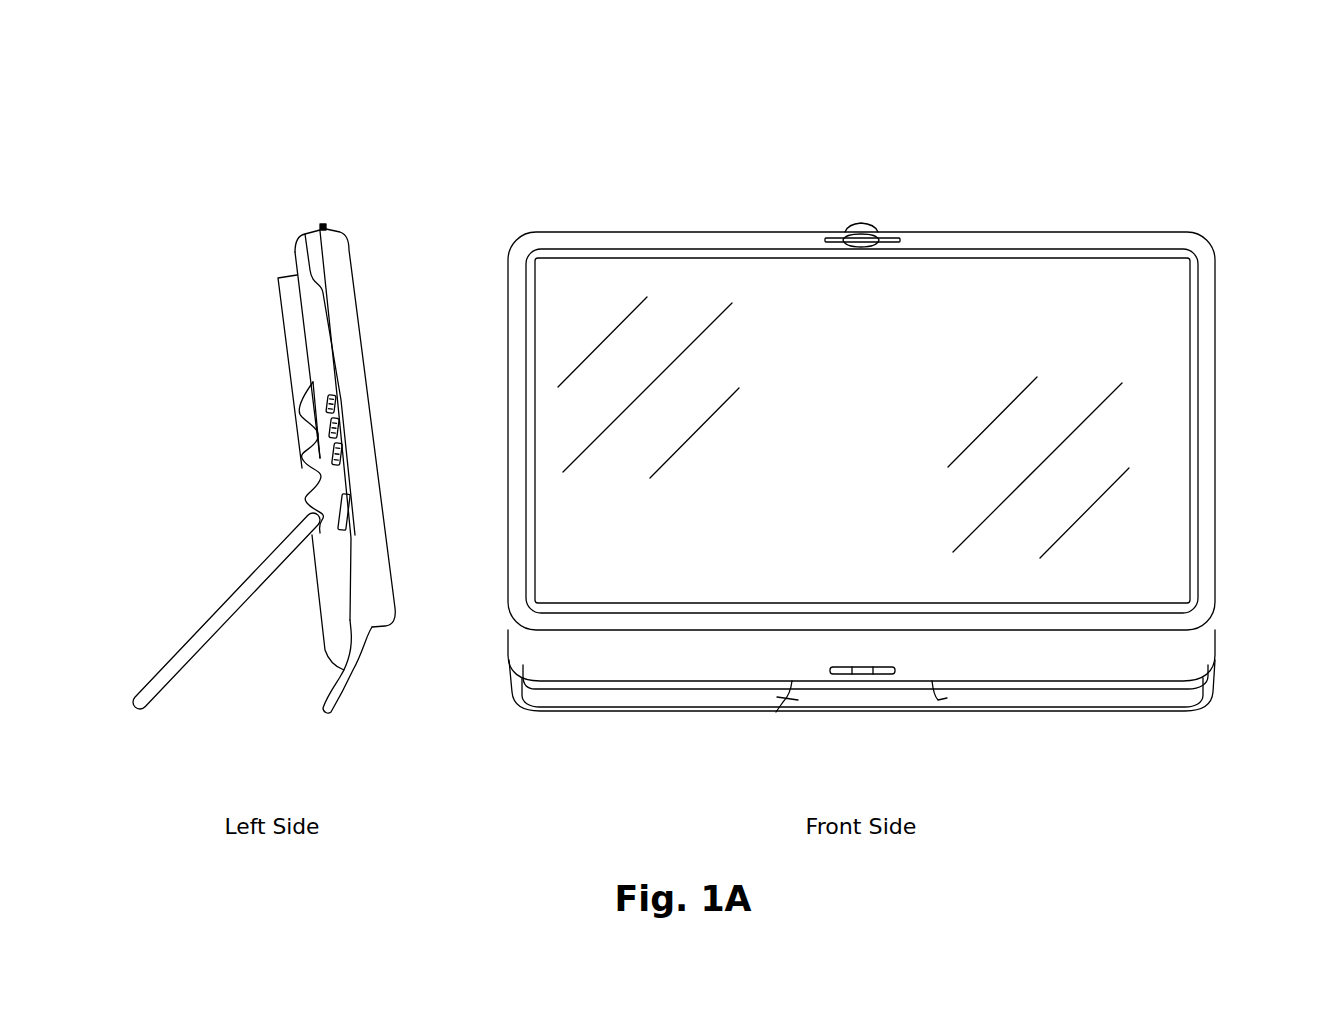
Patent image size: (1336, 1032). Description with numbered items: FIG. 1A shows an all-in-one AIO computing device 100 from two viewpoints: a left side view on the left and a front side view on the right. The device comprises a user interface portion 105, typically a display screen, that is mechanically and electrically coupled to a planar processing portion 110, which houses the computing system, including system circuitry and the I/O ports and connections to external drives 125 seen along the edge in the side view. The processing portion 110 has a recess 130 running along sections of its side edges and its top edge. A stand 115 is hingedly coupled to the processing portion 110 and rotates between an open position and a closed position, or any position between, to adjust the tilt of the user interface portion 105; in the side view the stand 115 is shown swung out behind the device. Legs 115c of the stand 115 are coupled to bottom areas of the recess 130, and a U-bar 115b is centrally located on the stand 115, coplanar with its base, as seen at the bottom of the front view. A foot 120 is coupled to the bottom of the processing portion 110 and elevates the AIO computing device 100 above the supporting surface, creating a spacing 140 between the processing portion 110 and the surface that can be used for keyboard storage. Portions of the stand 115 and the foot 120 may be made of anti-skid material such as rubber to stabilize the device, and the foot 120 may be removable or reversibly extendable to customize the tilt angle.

The AIO computing device 100 is at (389, 122).
The user interface portion 105 is at (337, 233).
The processing portion 110 is at (293, 233).
The stand 115 is at (238, 590).
The U-bar 115b is at (793, 681).
The legs 115c is at (1213, 690).
The foot 120 is at (347, 693).
The I/O ports and connections to external drives 125 is at (303, 458).
The recess 130 is at (285, 265).
The spacing 140 is at (650, 685).